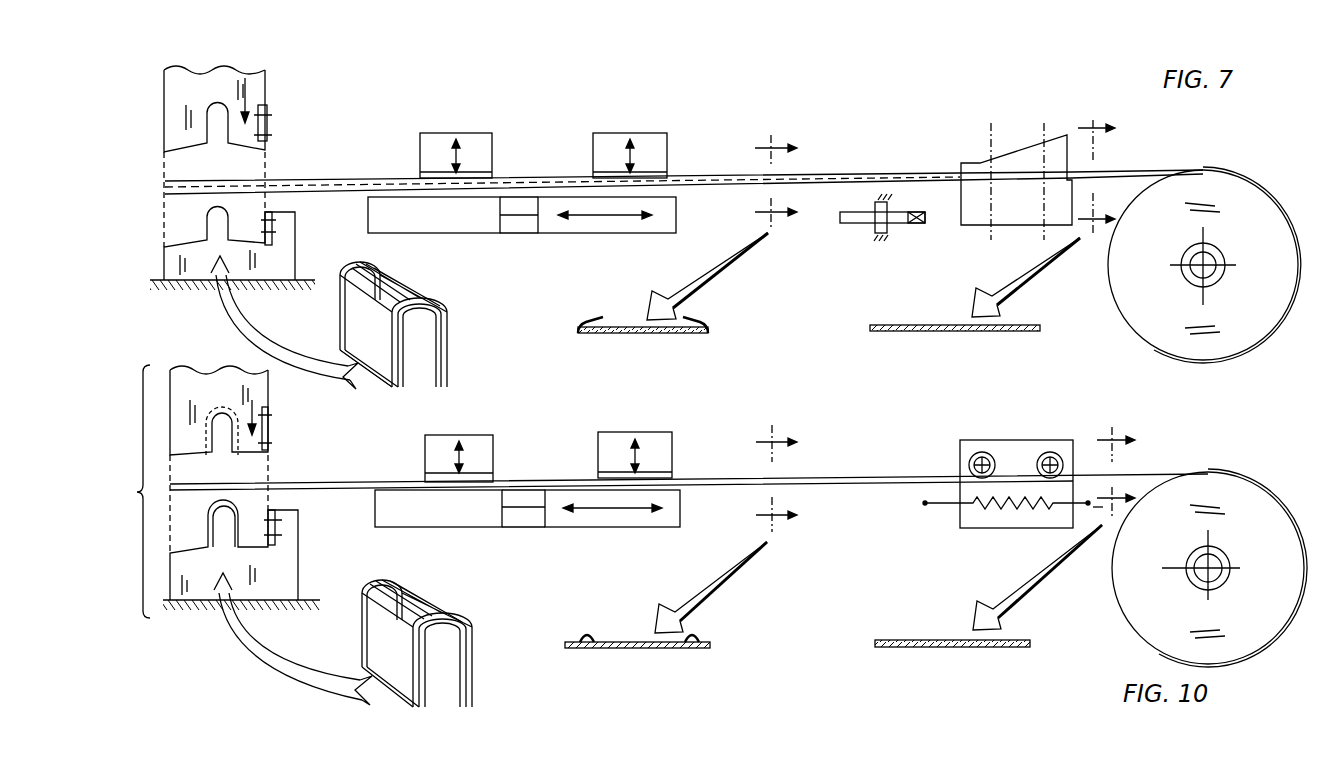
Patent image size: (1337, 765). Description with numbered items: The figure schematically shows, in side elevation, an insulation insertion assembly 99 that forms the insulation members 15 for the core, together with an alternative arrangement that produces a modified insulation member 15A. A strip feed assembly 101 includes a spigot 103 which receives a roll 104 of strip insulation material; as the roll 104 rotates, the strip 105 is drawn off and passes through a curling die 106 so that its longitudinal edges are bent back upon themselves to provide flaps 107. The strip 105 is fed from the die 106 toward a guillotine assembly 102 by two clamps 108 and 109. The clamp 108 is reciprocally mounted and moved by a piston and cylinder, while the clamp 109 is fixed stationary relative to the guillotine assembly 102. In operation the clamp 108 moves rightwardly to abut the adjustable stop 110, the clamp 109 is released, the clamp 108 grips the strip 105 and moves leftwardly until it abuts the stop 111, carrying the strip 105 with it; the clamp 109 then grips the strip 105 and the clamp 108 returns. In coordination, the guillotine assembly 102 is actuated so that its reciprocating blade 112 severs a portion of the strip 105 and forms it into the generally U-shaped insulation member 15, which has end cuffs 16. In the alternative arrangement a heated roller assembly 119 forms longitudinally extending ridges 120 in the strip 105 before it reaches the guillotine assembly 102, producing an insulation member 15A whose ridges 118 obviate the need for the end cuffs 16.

In FIG. 7, the insulation insertion assembly 99 is at (910, 93).
In FIG. 7, the strip feed assembly 101 is at (601, 112).
In FIG. 7, the guillotine assembly 102 is at (276, 156).
In FIG. 10, the guillotine assembly 102 is at (289, 461).
In FIG. 7, the spigot 103 is at (1208, 258).
In FIG. 10, the spigot 103 is at (1213, 560).
In FIG. 7, the roll 104 is at (1204, 252).
In FIG. 10, the roll 104 is at (1213, 562).
In FIG. 7, the strip 105 is at (1135, 175).
In FIG. 10, the strip 105 is at (1140, 472).
In FIG. 7, the curling die 106 is at (1017, 152).
In FIG. 7, the flaps 107 is at (593, 313).
In FIG. 7, the clamp 108 is at (683, 112).
In FIG. 7, the clamp 109 is at (444, 118).
In FIG. 7, the adjustable stop 110 is at (857, 217).
In FIG. 7, the stop 111 is at (518, 228).
In FIG. 7, the blade 112 is at (253, 83).
In FIG. 7, the insulation member 15 is at (388, 285).
In FIG. 7, the end cuffs 16 is at (343, 332).
In FIG. 10, the insulation member 15A is at (412, 638).
In FIG. 10, the ridges 118 is at (433, 613).
In FIG. 10, the heated roller assembly 119 is at (1040, 437).
In FIG. 10, the longitudinally extending ridges 120 is at (583, 635).